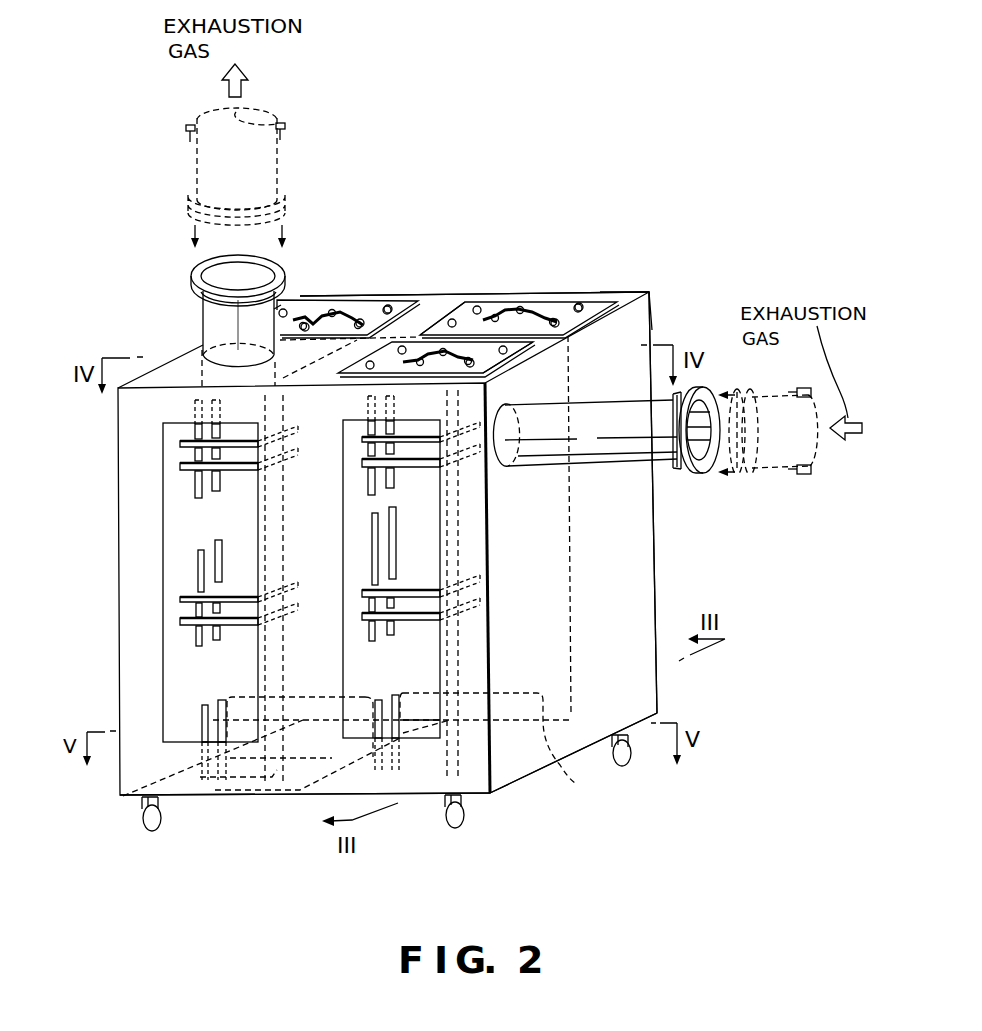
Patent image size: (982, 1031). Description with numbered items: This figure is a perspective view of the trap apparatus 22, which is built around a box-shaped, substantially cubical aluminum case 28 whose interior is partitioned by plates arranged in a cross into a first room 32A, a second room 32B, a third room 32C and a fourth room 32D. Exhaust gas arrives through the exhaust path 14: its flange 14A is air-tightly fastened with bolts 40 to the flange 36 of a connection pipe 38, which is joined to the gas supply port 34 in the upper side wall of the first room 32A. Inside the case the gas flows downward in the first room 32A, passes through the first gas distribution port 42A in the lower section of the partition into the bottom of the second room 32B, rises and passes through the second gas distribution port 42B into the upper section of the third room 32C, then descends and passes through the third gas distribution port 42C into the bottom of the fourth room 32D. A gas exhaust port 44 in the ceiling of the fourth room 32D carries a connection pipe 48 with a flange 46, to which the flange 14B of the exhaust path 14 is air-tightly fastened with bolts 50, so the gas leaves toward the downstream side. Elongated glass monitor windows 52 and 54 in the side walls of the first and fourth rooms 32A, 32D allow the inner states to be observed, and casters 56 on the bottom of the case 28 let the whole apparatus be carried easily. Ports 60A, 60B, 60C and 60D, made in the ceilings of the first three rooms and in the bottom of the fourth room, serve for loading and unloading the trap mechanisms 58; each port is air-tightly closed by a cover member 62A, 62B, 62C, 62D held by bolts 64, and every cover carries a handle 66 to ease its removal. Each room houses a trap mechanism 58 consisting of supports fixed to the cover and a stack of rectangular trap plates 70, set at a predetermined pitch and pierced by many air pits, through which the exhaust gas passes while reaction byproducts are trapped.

The exhaust path 14 is at (200, 161).
The flange of the exhaust path 14A is at (750, 482).
The flange of the exhaust path 14B is at (288, 197).
The trap apparatus 22 is at (343, 902).
The case 28 is at (120, 530).
The first room 32A is at (523, 770).
The second room 32B is at (600, 716).
The third room 32C is at (302, 296).
The fourth room 32D is at (126, 775).
The gas supply port 34 is at (515, 470).
The flange 36 is at (700, 476).
The connection pipe 38 is at (668, 468).
The bolts 40 is at (801, 388).
The first gas distribution port 42A is at (560, 762).
The second gas distribution port 42B is at (358, 390).
The third gas distribution port 42C is at (210, 710).
The gas exhaust port 44 is at (198, 352).
The flange 46 is at (197, 273).
The connection pipe 48 is at (205, 318).
The bolts 50 is at (287, 127).
The monitor window 52 is at (457, 740).
The monitor window 54 is at (152, 565).
The casters 56 is at (452, 828).
The trap mechanism 58 is at (172, 453).
The port 60A is at (527, 362).
The port 60B is at (647, 299).
The port 60C is at (420, 332).
The port 60D is at (278, 782).
The cover member 62A is at (471, 357).
The cover member 62B is at (560, 318).
The cover member 62C is at (372, 306).
The cover member 62D is at (197, 780).
The bolts 64 is at (389, 305).
The handle 66 is at (327, 302).
The trap plates 70 is at (172, 622).